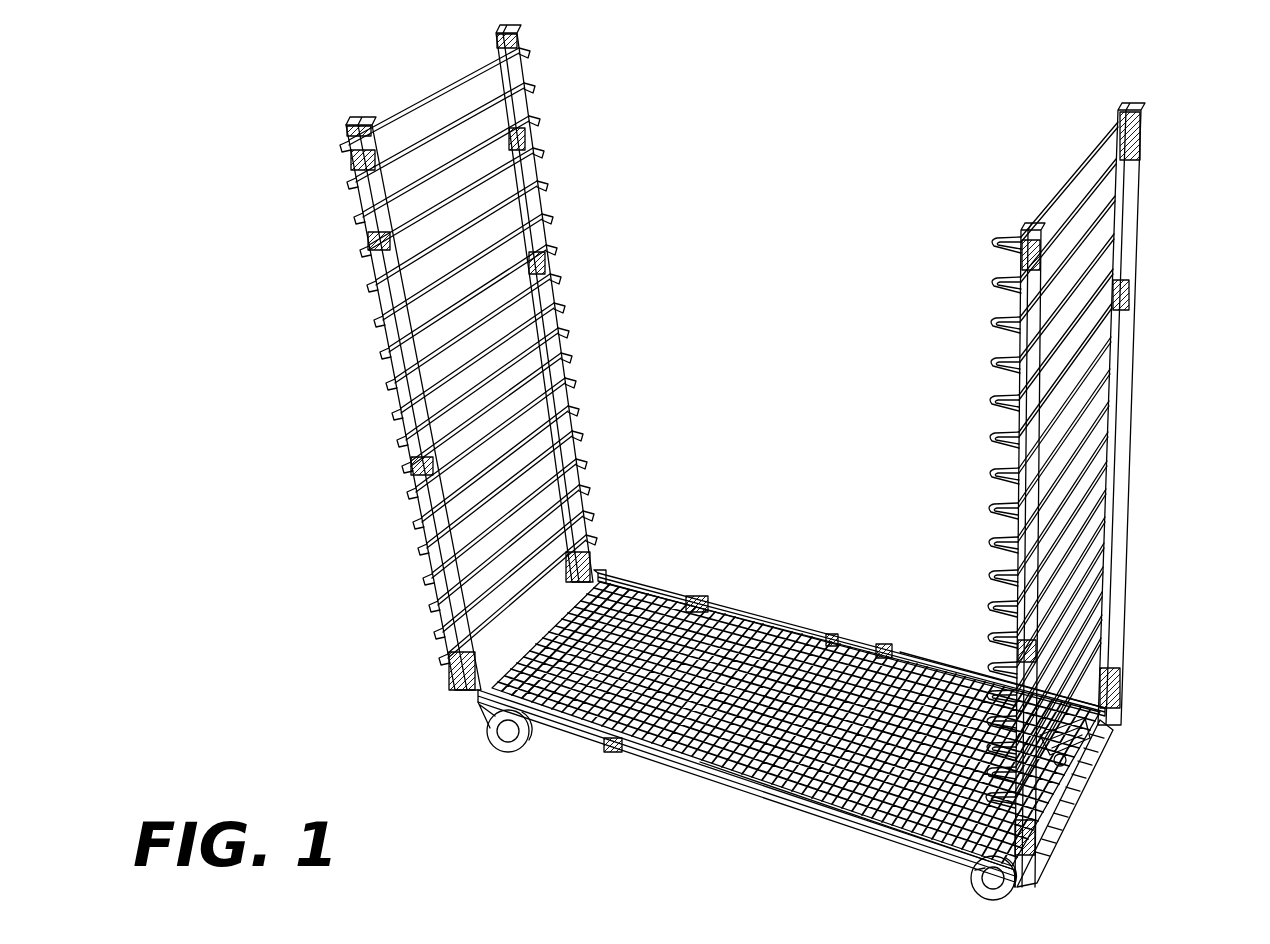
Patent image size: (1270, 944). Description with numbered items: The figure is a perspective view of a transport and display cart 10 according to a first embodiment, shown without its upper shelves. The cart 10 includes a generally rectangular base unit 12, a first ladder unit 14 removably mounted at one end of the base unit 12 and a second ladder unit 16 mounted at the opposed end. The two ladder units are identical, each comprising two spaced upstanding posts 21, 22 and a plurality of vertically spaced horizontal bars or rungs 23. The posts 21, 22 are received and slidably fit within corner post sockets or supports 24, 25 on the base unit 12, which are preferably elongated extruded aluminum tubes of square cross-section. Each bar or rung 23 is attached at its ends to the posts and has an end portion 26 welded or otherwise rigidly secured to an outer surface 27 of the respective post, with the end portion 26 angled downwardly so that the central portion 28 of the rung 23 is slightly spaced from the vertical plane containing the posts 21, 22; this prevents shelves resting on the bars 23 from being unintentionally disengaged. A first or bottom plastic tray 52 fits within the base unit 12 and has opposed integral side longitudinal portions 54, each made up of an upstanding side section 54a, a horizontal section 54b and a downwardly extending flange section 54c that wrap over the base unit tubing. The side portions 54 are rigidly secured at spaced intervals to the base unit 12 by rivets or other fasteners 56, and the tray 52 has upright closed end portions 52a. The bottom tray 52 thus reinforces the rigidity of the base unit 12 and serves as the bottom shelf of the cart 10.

The cart 10 is at (1153, 304).
The base unit 12 is at (1068, 816).
The first ladder unit 14 is at (391, 367).
The second ladder unit 16 is at (1129, 419).
The upstanding post 21 is at (365, 225).
The upstanding post 22 is at (535, 167).
The horizontal bar or rung 23 is at (524, 318).
The corner post socket or support 24 is at (455, 688).
The corner post socket or support 25 is at (597, 548).
The end portion 26 is at (352, 150).
The outer surface 27 is at (353, 162).
The central portion 28 is at (493, 162).
The first or bottom plastic tray 52 is at (690, 606).
The upright closed end portion 52a is at (1058, 742).
The side longitudinal portion 54 is at (738, 606).
The upstanding side section 54a is at (832, 643).
The horizontal section 54b is at (882, 652).
The downwardly extending flange section 54c is at (612, 742).
The rivets or other fasteners 56 is at (618, 580).